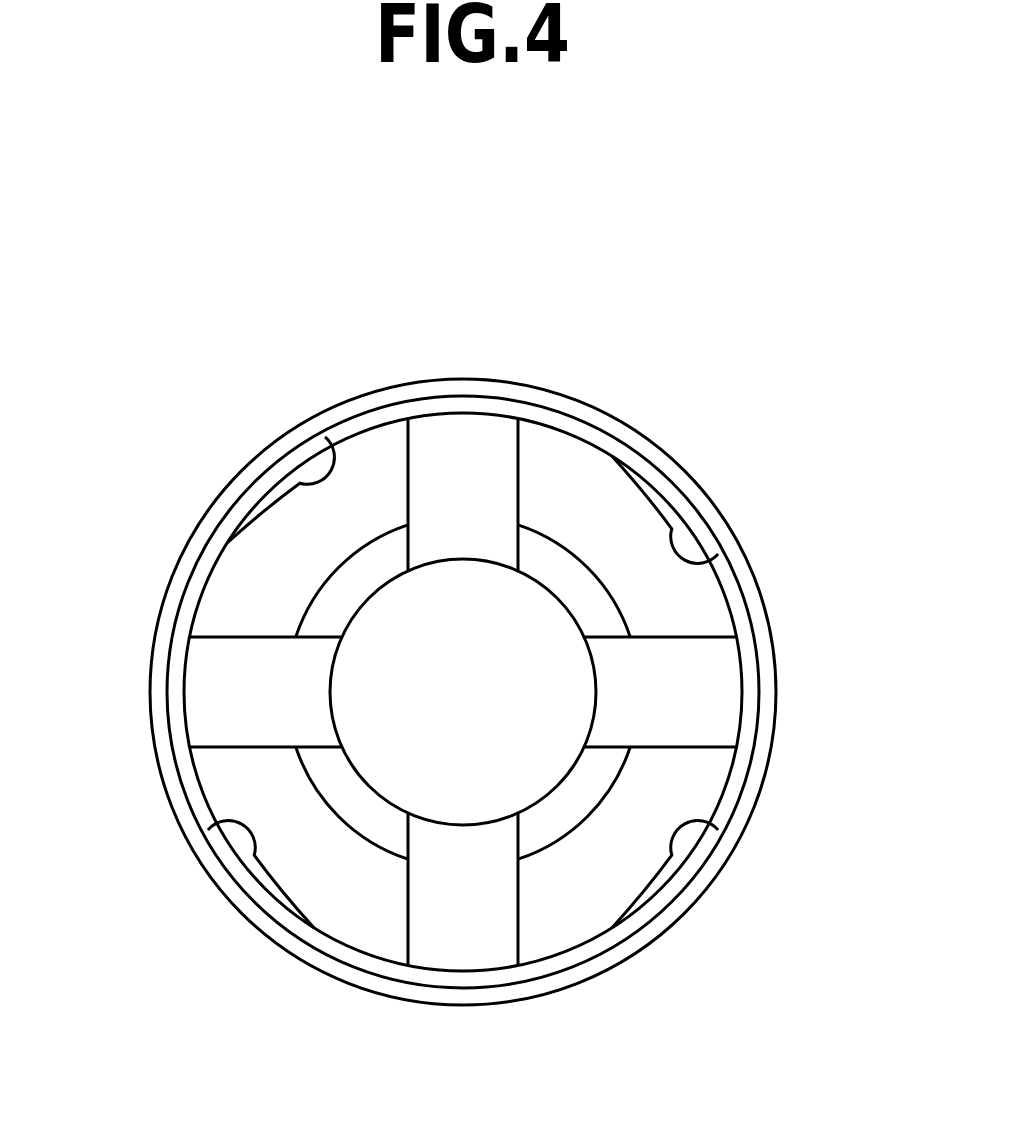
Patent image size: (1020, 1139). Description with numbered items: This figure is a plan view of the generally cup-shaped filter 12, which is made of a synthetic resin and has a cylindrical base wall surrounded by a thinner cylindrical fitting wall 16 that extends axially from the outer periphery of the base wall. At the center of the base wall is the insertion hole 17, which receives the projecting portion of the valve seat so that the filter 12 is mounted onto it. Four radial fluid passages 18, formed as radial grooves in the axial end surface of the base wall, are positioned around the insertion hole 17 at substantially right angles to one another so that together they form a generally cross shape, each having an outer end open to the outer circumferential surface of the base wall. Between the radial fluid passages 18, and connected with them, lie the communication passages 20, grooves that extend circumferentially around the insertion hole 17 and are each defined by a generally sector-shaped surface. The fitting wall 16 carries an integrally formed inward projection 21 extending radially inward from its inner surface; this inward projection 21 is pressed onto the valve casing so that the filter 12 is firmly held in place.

The filter 12 is at (703, 455).
The fitting wall 16 is at (775, 742).
The insertion hole 17 is at (560, 772).
The radial fluid passages 18 is at (476, 432).
The communication passages 20 is at (540, 548).
The inward projection 21 is at (337, 447).